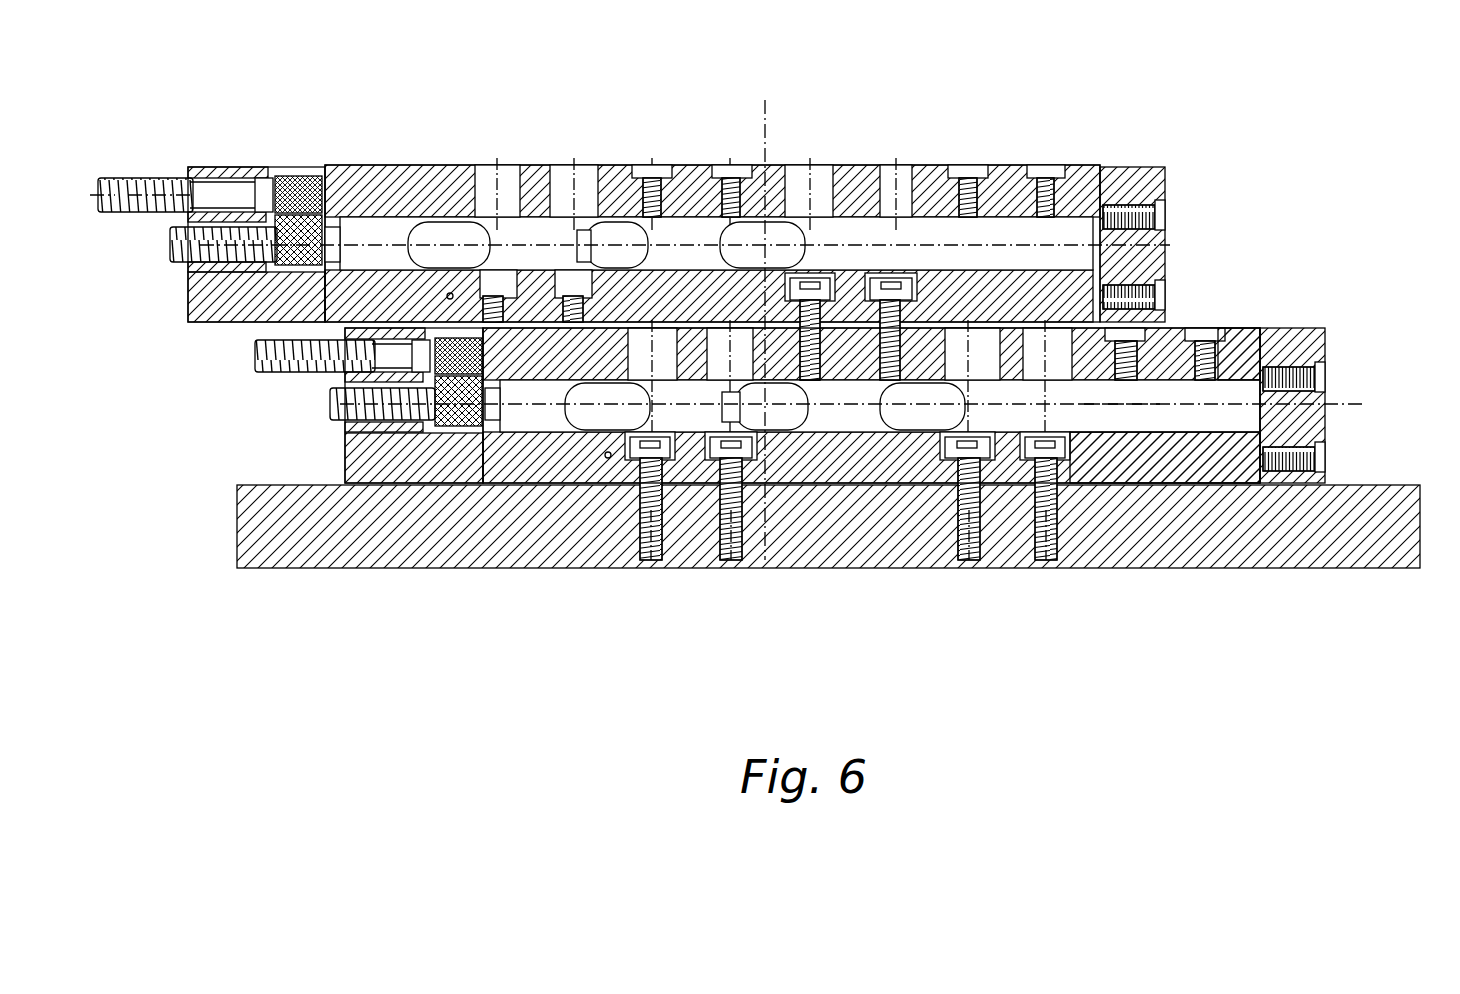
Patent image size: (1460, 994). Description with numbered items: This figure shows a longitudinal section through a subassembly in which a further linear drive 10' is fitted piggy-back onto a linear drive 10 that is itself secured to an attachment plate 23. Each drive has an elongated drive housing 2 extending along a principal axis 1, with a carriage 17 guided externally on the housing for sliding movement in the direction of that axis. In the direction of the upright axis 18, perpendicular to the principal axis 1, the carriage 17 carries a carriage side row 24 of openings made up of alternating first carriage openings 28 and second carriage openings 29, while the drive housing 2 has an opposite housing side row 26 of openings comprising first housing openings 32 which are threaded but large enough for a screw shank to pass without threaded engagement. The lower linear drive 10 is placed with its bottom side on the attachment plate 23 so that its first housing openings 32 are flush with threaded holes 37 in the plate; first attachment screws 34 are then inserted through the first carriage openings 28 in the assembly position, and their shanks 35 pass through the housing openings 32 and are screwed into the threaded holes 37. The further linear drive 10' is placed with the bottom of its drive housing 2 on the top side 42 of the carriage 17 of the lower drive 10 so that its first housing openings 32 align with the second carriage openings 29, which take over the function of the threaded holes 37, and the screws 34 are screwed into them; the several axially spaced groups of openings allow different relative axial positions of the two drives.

The principal axis 1 is at (330, 404).
The drive housing 2 is at (688, 288).
The linear drive 10 is at (937, 384).
The further linear drive 10' is at (730, 221).
The carriage 17 is at (398, 180).
The upright axis 18 is at (765, 112).
The attachment plate 23 is at (1372, 572).
The carriage side row of openings 24 is at (1232, 350).
The housing side row of openings 26 is at (1078, 470).
The first carriage openings 28 is at (488, 185).
The second carriage openings 29 is at (824, 378).
The first housing openings 32 is at (568, 298).
The first attachment screw 34 is at (720, 522).
The shank 35 is at (828, 335).
The threaded holes 37 is at (652, 562).
The top side 42 is at (1077, 407).